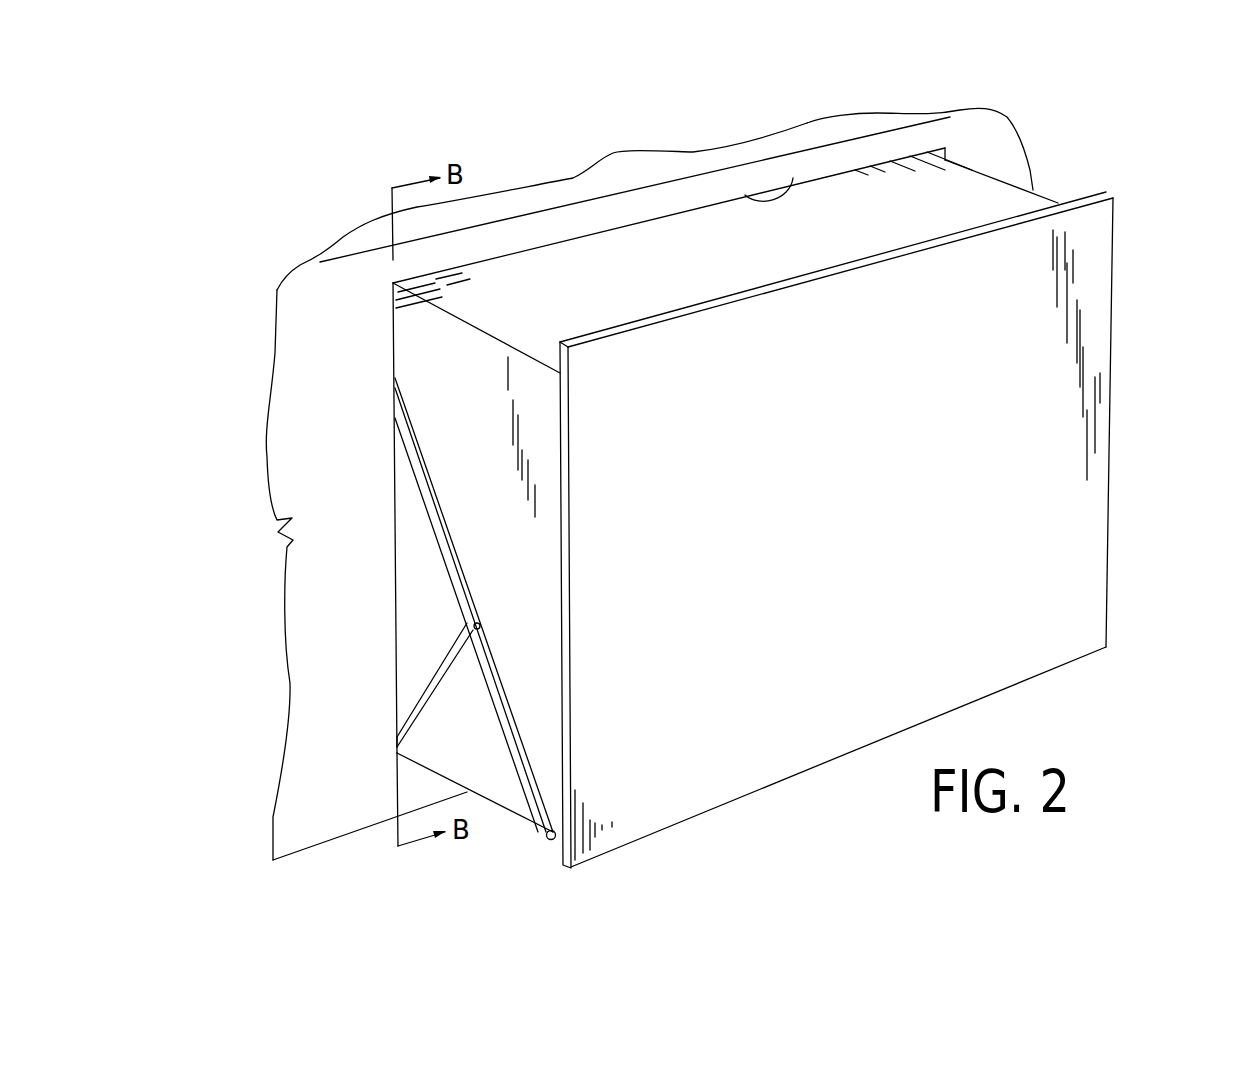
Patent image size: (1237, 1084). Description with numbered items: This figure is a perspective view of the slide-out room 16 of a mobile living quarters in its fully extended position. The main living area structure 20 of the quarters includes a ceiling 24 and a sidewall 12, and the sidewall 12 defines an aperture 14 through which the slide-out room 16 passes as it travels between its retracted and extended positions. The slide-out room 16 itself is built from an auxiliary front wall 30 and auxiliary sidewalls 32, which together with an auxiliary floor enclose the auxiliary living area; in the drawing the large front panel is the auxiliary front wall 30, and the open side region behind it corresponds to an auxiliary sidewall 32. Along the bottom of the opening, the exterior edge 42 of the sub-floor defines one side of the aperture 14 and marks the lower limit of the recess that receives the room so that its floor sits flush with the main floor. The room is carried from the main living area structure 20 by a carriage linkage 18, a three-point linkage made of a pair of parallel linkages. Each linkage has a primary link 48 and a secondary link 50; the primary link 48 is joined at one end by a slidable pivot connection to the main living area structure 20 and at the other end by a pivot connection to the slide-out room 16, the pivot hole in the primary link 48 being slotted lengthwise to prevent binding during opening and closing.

The sidewall 12 is at (308, 350).
The aperture 14 is at (793, 178).
The slide-out room 16 is at (983, 202).
The carriage linkage 18 is at (537, 800).
The main living area structure 20 is at (628, 170).
The ceiling 24 is at (724, 160).
The auxiliary front wall 30 is at (1072, 542).
The auxiliary sidewalls 32 is at (423, 617).
The exterior edge 42 is at (397, 775).
The primary link 48 is at (437, 518).
The secondary link 50 is at (415, 705).